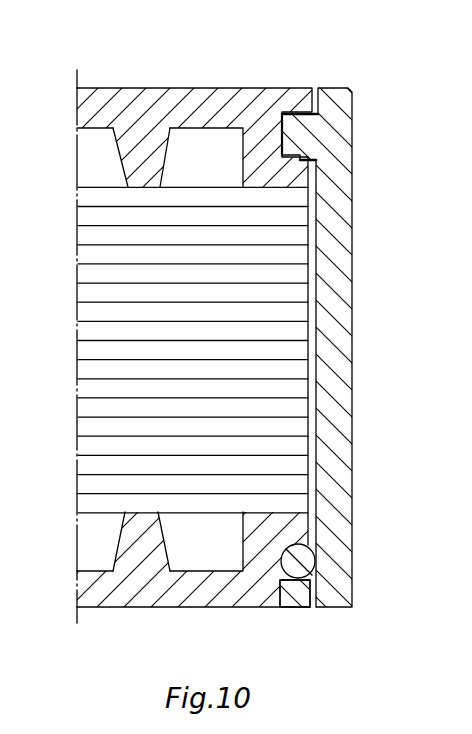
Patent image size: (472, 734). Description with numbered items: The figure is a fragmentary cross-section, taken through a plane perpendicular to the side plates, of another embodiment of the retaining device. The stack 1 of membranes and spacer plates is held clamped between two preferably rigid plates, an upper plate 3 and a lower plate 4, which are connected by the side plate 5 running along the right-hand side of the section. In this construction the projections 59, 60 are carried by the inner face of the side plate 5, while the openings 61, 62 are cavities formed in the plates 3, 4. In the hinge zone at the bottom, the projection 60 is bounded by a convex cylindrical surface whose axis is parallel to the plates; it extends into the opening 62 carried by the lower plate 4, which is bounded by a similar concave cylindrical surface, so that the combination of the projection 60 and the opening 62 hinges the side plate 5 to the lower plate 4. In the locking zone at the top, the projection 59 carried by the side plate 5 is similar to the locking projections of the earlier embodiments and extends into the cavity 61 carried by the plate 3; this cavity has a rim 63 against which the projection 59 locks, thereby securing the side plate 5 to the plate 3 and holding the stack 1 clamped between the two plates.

The stack 1 is at (112, 315).
The plate 3 is at (146, 120).
The plate 4 is at (153, 588).
The side plate 5 is at (332, 368).
The projection 59 is at (290, 133).
The projection 60 is at (297, 564).
The opening 61 is at (294, 113).
The opening 62 is at (290, 575).
The rim 63 is at (305, 161).